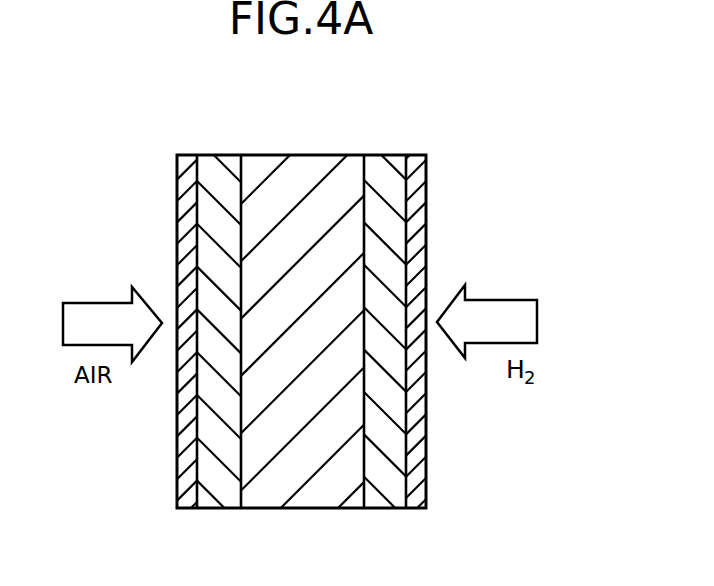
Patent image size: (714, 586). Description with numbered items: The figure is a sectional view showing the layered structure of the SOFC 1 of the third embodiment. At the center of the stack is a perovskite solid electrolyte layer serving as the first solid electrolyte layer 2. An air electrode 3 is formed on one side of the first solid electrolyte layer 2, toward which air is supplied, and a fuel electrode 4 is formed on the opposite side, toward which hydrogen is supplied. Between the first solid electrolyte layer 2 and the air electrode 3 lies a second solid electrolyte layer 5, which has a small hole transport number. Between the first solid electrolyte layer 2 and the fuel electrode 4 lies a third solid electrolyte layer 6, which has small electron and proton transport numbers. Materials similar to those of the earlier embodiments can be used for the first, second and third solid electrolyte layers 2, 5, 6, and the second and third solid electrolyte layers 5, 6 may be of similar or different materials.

The SOFC 1 is at (497, 249).
The first solid electrolyte layer 2 is at (318, 487).
The air electrode 3 is at (178, 209).
The fuel electrode 4 is at (428, 209).
The second solid electrolyte layer 5 is at (217, 146).
The third solid electrolyte layer 6 is at (374, 146).